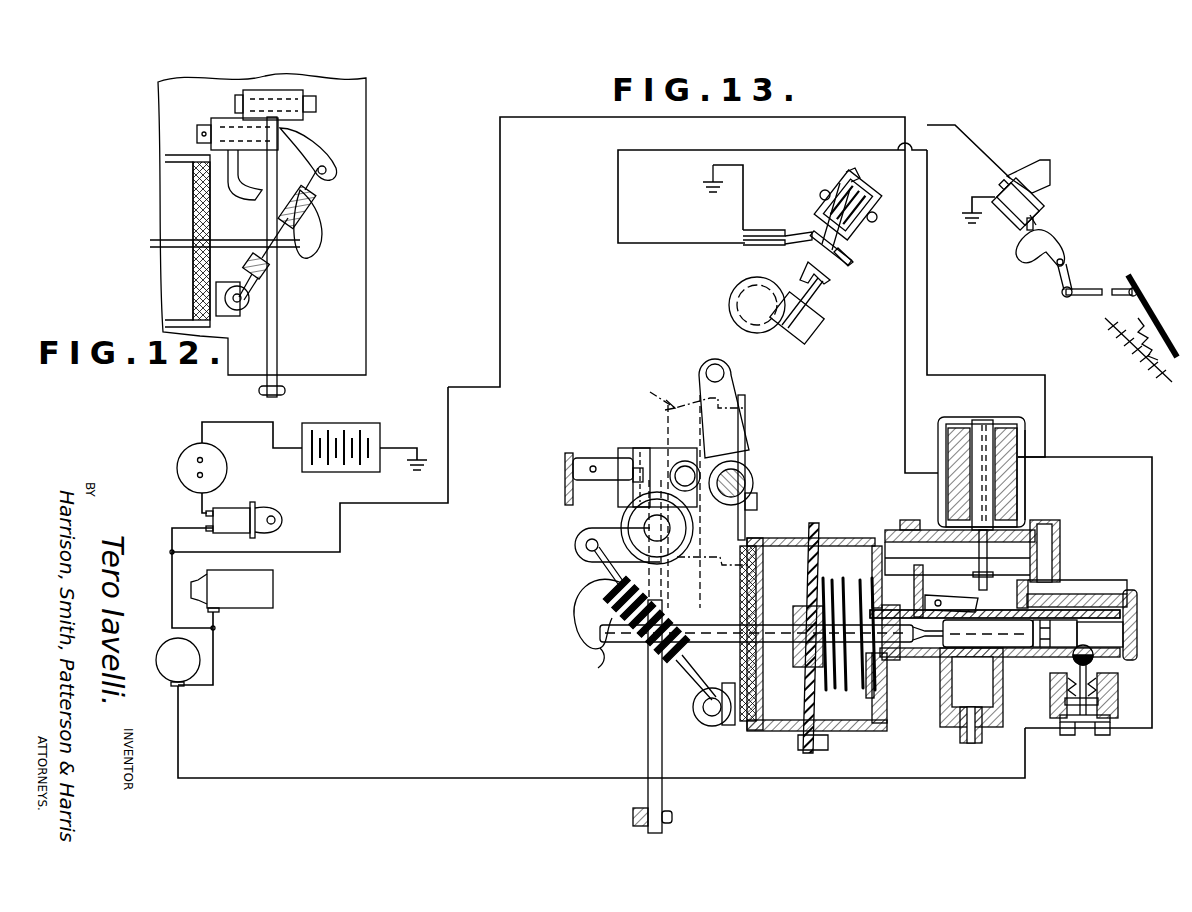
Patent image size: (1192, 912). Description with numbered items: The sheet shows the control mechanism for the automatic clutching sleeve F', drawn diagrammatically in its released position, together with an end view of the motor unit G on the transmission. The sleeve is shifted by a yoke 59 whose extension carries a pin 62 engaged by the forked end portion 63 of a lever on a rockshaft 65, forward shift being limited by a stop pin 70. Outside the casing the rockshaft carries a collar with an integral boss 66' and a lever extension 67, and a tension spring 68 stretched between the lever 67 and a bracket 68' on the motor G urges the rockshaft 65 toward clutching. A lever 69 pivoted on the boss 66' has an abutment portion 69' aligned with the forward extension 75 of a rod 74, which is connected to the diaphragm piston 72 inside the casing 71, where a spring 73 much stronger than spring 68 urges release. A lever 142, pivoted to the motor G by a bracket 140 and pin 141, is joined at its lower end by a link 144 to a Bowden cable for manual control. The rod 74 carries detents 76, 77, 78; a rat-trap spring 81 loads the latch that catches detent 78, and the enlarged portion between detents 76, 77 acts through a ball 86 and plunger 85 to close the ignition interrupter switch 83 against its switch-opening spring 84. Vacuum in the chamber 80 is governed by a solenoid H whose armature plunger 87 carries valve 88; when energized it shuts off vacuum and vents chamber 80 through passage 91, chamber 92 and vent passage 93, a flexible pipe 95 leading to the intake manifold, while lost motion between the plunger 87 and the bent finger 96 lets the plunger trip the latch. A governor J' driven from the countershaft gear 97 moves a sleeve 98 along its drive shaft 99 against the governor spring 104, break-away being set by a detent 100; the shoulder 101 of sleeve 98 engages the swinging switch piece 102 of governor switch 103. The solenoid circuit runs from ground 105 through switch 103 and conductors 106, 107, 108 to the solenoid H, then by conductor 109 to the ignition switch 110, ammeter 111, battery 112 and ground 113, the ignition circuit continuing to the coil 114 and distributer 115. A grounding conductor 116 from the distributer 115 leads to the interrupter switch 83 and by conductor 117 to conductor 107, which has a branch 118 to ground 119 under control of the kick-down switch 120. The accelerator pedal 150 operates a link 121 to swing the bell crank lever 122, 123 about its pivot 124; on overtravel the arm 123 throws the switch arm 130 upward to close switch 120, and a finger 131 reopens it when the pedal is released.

In FIG. 12, the boss 66' is at (331, 100).
In FIG. 12, the pin 141 is at (210, 126).
In FIG. 12, the lever extension 67 is at (305, 150).
In FIG. 13, the lever extension 67 is at (640, 495).
In FIG. 12, the bracket 140 is at (212, 170).
In FIG. 12, the forward extension 75 is at (248, 238).
In FIG. 13, the forward extension 75 is at (704, 624).
In FIG. 12, the lever 69 is at (328, 198).
In FIG. 13, the lever 69 is at (576, 598).
In FIG. 12, the abutment portion 69' is at (338, 224).
In FIG. 13, the abutment portion 69' is at (574, 660).
In FIG. 12, the tension spring 68 is at (279, 259).
In FIG. 13, the tension spring 68 is at (655, 638).
In FIG. 12, the bracket 68' is at (265, 299).
In FIG. 13, the bracket 68' is at (714, 718).
In FIG. 12, the motor unit G is at (152, 309).
In FIG. 13, the motor unit G is at (833, 527).
In FIG. 12, the lever 142 is at (278, 346).
In FIG. 13, the lever 142 is at (647, 706).
In FIG. 13, the link 144 is at (634, 808).
In FIG. 13, the conductor 106 is at (684, 150).
In FIG. 13, the ground 105 is at (710, 190).
In FIG. 13, the governor J' is at (840, 198).
In FIG. 13, the governor spring 104 is at (818, 192).
In FIG. 13, the swinging switch piece 102 is at (818, 214).
In FIG. 13, the drive shaft 99 is at (858, 186).
In FIG. 13, the sleeve 98 is at (852, 250).
In FIG. 13, the shoulder 101 is at (848, 262).
In FIG. 13, the detent 100 is at (820, 280).
In FIG. 13, the governor switch 103 is at (764, 246).
In FIG. 13, the countershaft gear 97 is at (728, 302).
In FIG. 13, the conductor 109 is at (501, 270).
In FIG. 13, the branch conductor 118 is at (980, 135).
In FIG. 13, the ground 119 is at (968, 220).
In FIG. 13, the kick-down switch 120 is at (1038, 192).
In FIG. 13, the switch arm 130 is at (1038, 216).
In FIG. 13, the finger 131 is at (1036, 228).
In FIG. 13, the bell crank lever arm 123 is at (1050, 242).
In FIG. 13, the pivot 124 is at (1062, 258).
In FIG. 13, the bell crank lever arm 122 is at (1080, 288).
In FIG. 13, the link 121 is at (1118, 288).
In FIG. 13, the accelerator pedal 150 is at (1134, 276).
In FIG. 13, the conductor 107 is at (928, 336).
In FIG. 13, the battery 112 is at (330, 430).
In FIG. 13, the ground 113 is at (424, 458).
In FIG. 13, the ammeter 111 is at (222, 464).
In FIG. 13, the ignition switch 110 is at (220, 512).
In FIG. 13, the coil 114 is at (262, 590).
In FIG. 13, the distributer 115 is at (192, 658).
In FIG. 13, the grounding conductor 116 is at (218, 778).
In FIG. 13, the automatic clutching sleeve F' is at (689, 469).
In FIG. 13, the yoke 59 is at (722, 430).
In FIG. 13, the stop pin 70 is at (582, 462).
In FIG. 13, the pin 62 is at (686, 462).
In FIG. 13, the forked end portion 63 is at (742, 470).
In FIG. 13, the rockshaft 65 is at (670, 522).
In FIG. 13, the casing 71 is at (788, 536).
In FIG. 13, the diaphragm piston 72 is at (798, 560).
In FIG. 13, the spring 73 is at (858, 578).
In FIG. 13, the rod 74 is at (902, 655).
In FIG. 13, the chamber 80 is at (870, 726).
In FIG. 13, the flexible pipe 95 is at (962, 730).
In FIG. 13, the passage 91 is at (913, 598).
In FIG. 13, the chamber 92 is at (908, 536).
In FIG. 13, the vent passage 93 is at (920, 520).
In FIG. 13, the valve 88 is at (980, 520).
In FIG. 13, the solenoid H is at (992, 414).
In FIG. 13, the armature plunger 87 is at (1020, 470).
In FIG. 13, the conductor 108 is at (1046, 456).
In FIG. 13, the conductor 117 is at (1152, 504).
In FIG. 13, the inwardly bent finger 96 is at (1060, 552).
In FIG. 13, the rat-trap spring 81 is at (1058, 588).
In FIG. 13, the detent 78 is at (948, 634).
In FIG. 13, the detent 77 is at (1034, 634).
In FIG. 13, the detent 76 is at (1078, 634).
In FIG. 13, the ball 86 is at (1058, 662).
In FIG. 13, the plunger 85 is at (1056, 688).
In FIG. 13, the switch-opening spring 84 is at (1098, 702).
In FIG. 13, the interrupter switch 83 is at (1082, 735).